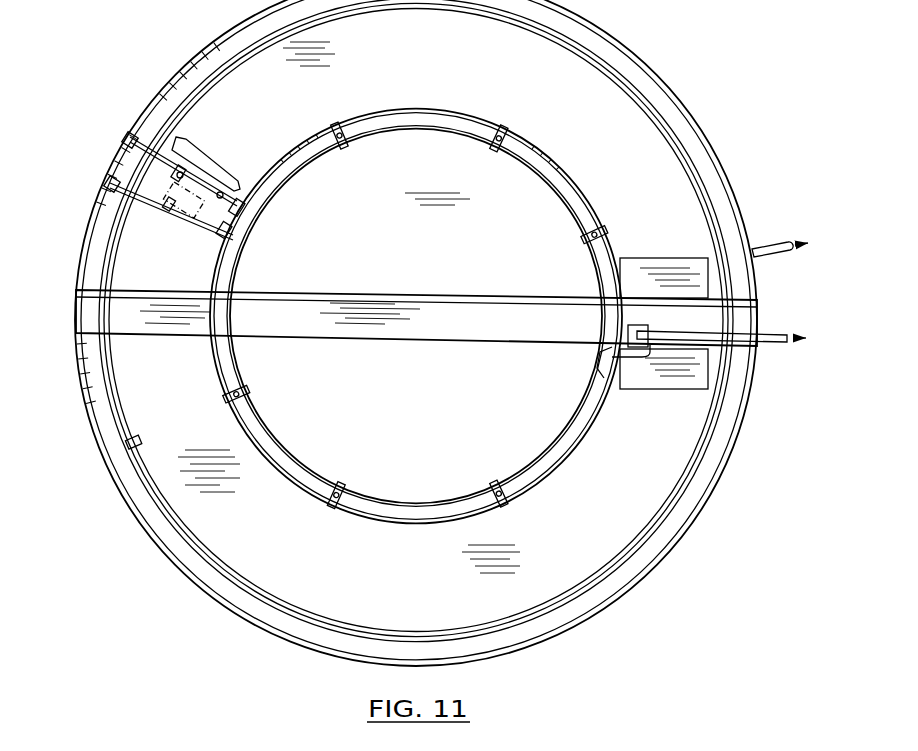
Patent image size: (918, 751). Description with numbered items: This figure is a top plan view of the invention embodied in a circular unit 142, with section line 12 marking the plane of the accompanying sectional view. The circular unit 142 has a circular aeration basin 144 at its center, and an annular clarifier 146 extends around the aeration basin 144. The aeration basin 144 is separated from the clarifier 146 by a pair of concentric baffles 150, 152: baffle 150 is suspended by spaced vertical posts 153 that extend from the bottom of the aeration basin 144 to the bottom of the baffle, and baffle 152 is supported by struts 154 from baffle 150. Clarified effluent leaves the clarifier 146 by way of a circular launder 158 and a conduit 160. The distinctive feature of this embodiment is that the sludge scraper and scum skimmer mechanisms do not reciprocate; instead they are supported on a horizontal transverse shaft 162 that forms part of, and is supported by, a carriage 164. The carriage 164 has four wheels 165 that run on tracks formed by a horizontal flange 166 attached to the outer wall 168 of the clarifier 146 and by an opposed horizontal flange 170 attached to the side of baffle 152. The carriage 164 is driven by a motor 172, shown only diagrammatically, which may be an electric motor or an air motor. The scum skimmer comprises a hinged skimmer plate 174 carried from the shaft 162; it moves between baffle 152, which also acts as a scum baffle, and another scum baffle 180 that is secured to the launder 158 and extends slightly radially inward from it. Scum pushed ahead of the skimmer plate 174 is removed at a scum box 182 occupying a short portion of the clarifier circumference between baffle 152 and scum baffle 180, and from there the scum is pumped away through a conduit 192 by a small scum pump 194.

The section line 12 is at (85, 181).
The circular unit 142 is at (690, 83).
The circular aeration basin 144 is at (434, 270).
The annular clarifier 146 is at (655, 490).
The baffle 150 is at (405, 503).
The baffle 152 is at (428, 522).
The vertical posts 153 is at (482, 147).
The struts 154 is at (583, 238).
The circular launder 158 is at (240, 600).
The conduit 160 is at (735, 268).
The horizontal transverse shaft 162 is at (176, 147).
The carriage 164 is at (193, 221).
The wheels 165 is at (125, 139).
The horizontal flange 166 is at (95, 214).
The outer wall 168 is at (178, 548).
The horizontal flange 170 is at (337, 119).
The motor 172 is at (167, 192).
The skimmer plate 174 is at (229, 168).
The scum baffle 180 is at (222, 556).
The scum box 182 is at (660, 256).
The conduit 192 is at (612, 345).
The scum pump 194 is at (628, 333).